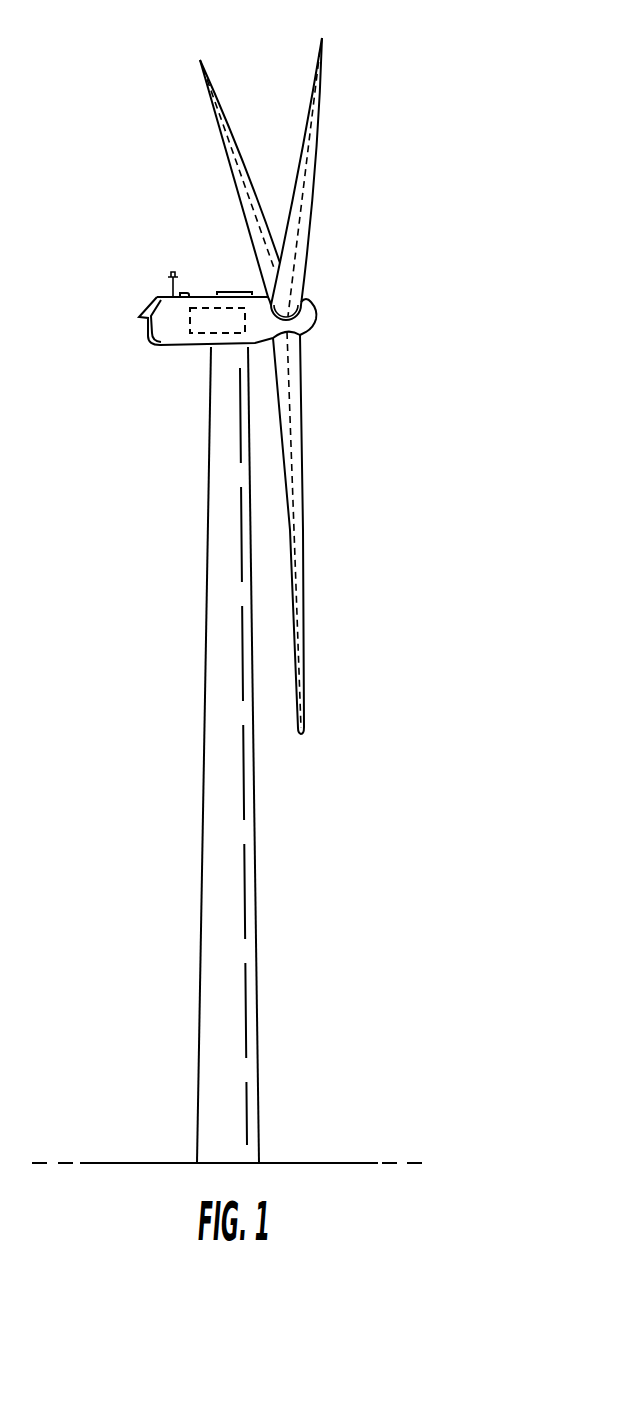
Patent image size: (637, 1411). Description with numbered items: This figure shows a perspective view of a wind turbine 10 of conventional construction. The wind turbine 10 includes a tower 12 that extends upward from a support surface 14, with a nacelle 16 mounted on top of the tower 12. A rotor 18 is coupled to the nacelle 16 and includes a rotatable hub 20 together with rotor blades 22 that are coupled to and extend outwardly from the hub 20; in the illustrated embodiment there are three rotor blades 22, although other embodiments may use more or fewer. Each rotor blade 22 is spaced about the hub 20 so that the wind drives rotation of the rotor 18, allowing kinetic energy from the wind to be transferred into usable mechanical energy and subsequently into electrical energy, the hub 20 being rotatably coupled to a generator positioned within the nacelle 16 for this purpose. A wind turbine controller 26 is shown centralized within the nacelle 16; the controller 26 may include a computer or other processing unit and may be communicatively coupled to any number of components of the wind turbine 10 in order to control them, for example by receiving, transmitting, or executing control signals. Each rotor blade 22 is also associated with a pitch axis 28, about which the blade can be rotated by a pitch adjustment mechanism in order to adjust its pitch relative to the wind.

The wind turbine 10 is at (436, 214).
The tower 12 is at (232, 879).
The support surface 14 is at (168, 1163).
The nacelle 16 is at (178, 340).
The rotor 18 is at (324, 294).
The rotatable hub 20 is at (311, 321).
The rotor blade 22 is at (308, 110).
The wind turbine controller 26 is at (206, 308).
The pitch axis 28 is at (236, 173).